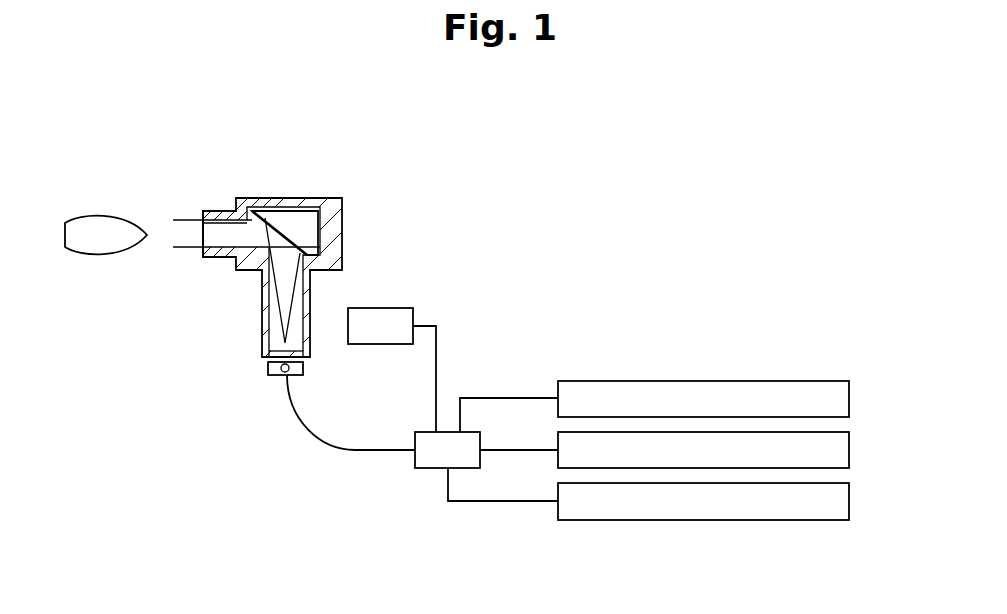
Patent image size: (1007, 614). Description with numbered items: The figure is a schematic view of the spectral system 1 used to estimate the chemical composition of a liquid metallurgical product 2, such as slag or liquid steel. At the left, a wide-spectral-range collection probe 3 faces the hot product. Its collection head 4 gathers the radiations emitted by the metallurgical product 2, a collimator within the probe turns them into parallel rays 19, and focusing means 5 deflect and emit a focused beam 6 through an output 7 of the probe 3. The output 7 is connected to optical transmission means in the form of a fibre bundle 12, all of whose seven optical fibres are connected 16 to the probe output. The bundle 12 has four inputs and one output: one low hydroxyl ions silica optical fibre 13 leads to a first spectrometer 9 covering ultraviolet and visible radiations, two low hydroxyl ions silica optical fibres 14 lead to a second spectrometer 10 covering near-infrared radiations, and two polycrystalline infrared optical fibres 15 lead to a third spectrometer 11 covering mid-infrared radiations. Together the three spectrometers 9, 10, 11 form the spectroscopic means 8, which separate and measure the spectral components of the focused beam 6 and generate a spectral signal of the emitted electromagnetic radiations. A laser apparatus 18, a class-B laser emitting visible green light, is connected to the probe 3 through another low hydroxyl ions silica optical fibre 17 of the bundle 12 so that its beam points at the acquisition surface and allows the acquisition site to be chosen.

The spectral system 1 is at (412, 158).
The liquid metallurgical product 2 is at (95, 220).
The collection probe 3 is at (304, 190).
The collection head 4 is at (203, 215).
The focusing means 5 is at (290, 228).
The focused beam 6 is at (268, 352).
The output 7 is at (268, 370).
The spectroscopic means 8 is at (856, 364).
The first spectrometer 9 is at (838, 400).
The second spectrometer 10 is at (840, 452).
The third spectrometer 11 is at (845, 503).
The fibre bundle 12 is at (414, 482).
The low hydroxyl ions silica optical fibre 13 is at (508, 398).
The low hydroxyl ions silica optical fibres 14 is at (522, 450).
The polycrystalline infrared optical fibres 15 is at (488, 502).
The connection 16 is at (324, 442).
The low hydroxyl ions silica optical fibre 17 is at (437, 345).
The laser apparatus 18 is at (394, 323).
The parallel rays 19 is at (182, 251).